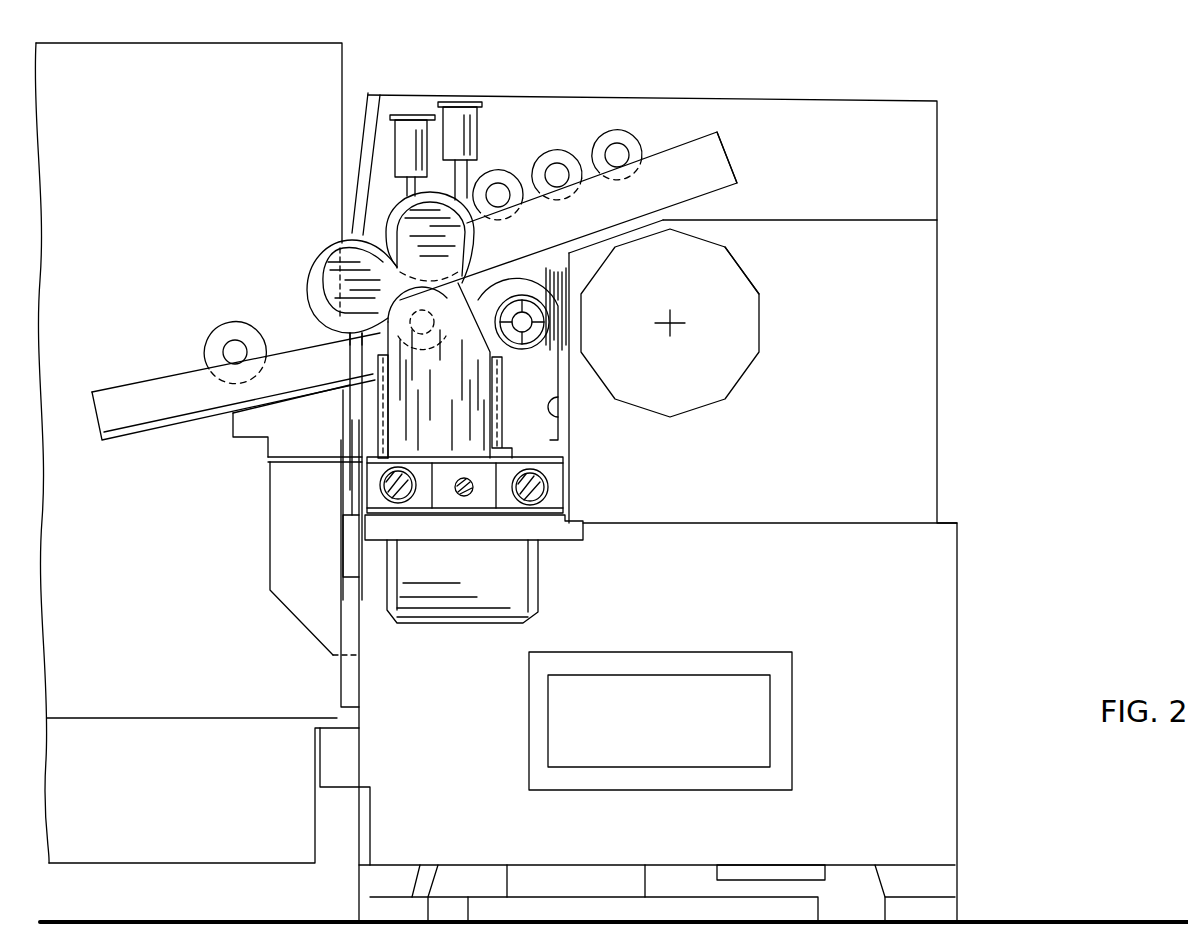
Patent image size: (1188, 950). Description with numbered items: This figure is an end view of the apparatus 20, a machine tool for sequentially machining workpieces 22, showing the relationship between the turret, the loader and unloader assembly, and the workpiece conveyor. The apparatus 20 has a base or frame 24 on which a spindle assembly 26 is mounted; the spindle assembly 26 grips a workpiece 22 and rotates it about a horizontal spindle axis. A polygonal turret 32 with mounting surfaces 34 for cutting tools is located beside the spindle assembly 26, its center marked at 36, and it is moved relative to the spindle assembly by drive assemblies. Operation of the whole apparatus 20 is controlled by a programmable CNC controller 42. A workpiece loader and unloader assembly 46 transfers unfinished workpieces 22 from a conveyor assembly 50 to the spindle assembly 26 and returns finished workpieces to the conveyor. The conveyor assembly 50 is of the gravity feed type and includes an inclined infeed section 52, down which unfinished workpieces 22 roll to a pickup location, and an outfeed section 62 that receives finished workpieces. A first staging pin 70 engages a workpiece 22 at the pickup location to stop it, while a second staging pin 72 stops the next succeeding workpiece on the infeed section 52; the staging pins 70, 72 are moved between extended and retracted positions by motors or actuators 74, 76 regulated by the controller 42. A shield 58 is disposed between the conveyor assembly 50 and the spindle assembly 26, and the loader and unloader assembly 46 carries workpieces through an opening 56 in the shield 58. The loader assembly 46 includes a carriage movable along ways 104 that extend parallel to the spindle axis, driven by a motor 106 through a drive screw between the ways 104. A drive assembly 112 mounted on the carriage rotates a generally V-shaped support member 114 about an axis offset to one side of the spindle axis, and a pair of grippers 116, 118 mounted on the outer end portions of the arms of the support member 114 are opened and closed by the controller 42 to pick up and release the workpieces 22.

The apparatus 20 is at (980, 133).
The workpieces 22 is at (498, 195).
The base or frame 24 is at (930, 808).
The spindle assembly 26 is at (533, 330).
The polygonal turret 32 is at (720, 373).
The mounting surfaces 34 is at (760, 316).
The turret axis 36 is at (673, 327).
The CNC controller 42 is at (224, 58).
The workpiece loader and unloader assembly 46 is at (374, 441).
The conveyor assembly 50 is at (690, 139).
The infeed section 52 is at (708, 175).
The opening 56 is at (556, 410).
The shield 58 is at (545, 270).
The outfeed section 62 is at (163, 410).
The first staging pin 70 is at (410, 187).
The second staging pin 72 is at (468, 170).
The motor or actuator 74 is at (408, 137).
The motor or actuator 76 is at (465, 127).
The ways 104 is at (398, 485).
The motor 106 is at (464, 496).
The drive assembly 112 is at (465, 397).
The support member 114 is at (332, 284).
The gripper 116 is at (470, 240).
The gripper 118 is at (325, 262).